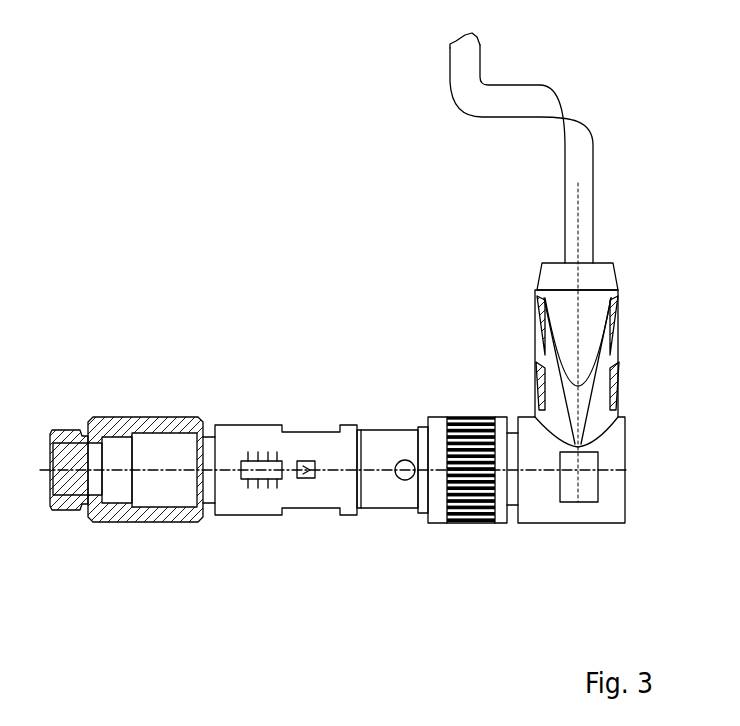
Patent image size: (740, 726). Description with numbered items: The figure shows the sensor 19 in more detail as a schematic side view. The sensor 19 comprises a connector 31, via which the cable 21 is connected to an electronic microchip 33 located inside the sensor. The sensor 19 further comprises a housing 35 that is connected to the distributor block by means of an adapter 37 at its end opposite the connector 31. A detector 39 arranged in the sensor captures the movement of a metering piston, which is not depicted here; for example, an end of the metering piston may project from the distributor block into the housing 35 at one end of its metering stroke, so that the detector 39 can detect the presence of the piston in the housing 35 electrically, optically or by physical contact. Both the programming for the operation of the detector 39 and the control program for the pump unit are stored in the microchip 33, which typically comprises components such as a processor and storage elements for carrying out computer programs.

The sensor 19 is at (296, 276).
The cable 21 is at (523, 98).
The connector 31 is at (538, 508).
The electronic microchip 33 is at (272, 478).
The housing 35 is at (347, 506).
The adapter 37 is at (158, 511).
The detector 39 is at (165, 453).